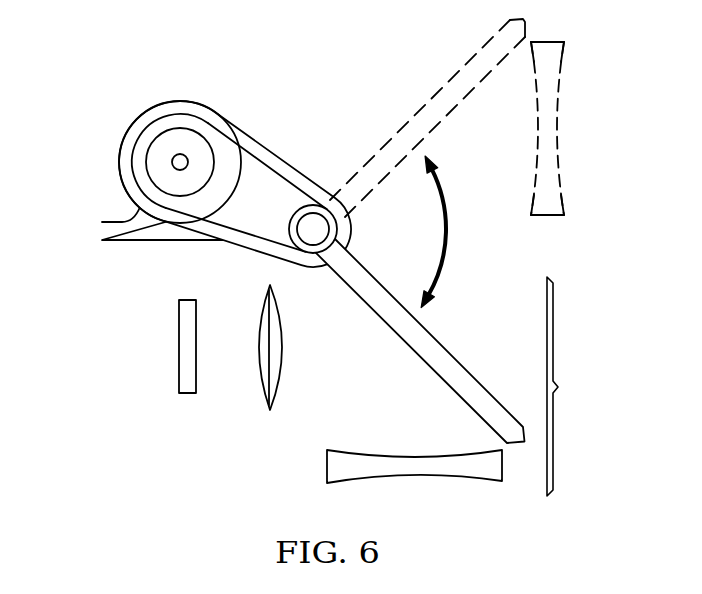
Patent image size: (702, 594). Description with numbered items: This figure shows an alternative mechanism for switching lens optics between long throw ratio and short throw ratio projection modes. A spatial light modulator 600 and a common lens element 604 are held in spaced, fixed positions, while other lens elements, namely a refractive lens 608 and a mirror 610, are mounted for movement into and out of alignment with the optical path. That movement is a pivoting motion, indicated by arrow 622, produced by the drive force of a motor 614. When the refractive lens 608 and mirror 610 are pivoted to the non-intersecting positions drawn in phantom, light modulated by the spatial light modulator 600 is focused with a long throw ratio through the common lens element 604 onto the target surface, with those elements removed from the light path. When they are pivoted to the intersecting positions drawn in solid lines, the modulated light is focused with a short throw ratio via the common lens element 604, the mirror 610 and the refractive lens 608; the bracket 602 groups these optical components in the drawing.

The spatial light modulator 600 is at (177, 347).
The optical assembly 602 is at (576, 386).
The common lens element 604 is at (265, 393).
The refractive lens 608 is at (327, 467).
The mirror 610 is at (417, 350).
The motor 614 is at (118, 156).
The arrow 622 is at (450, 233).